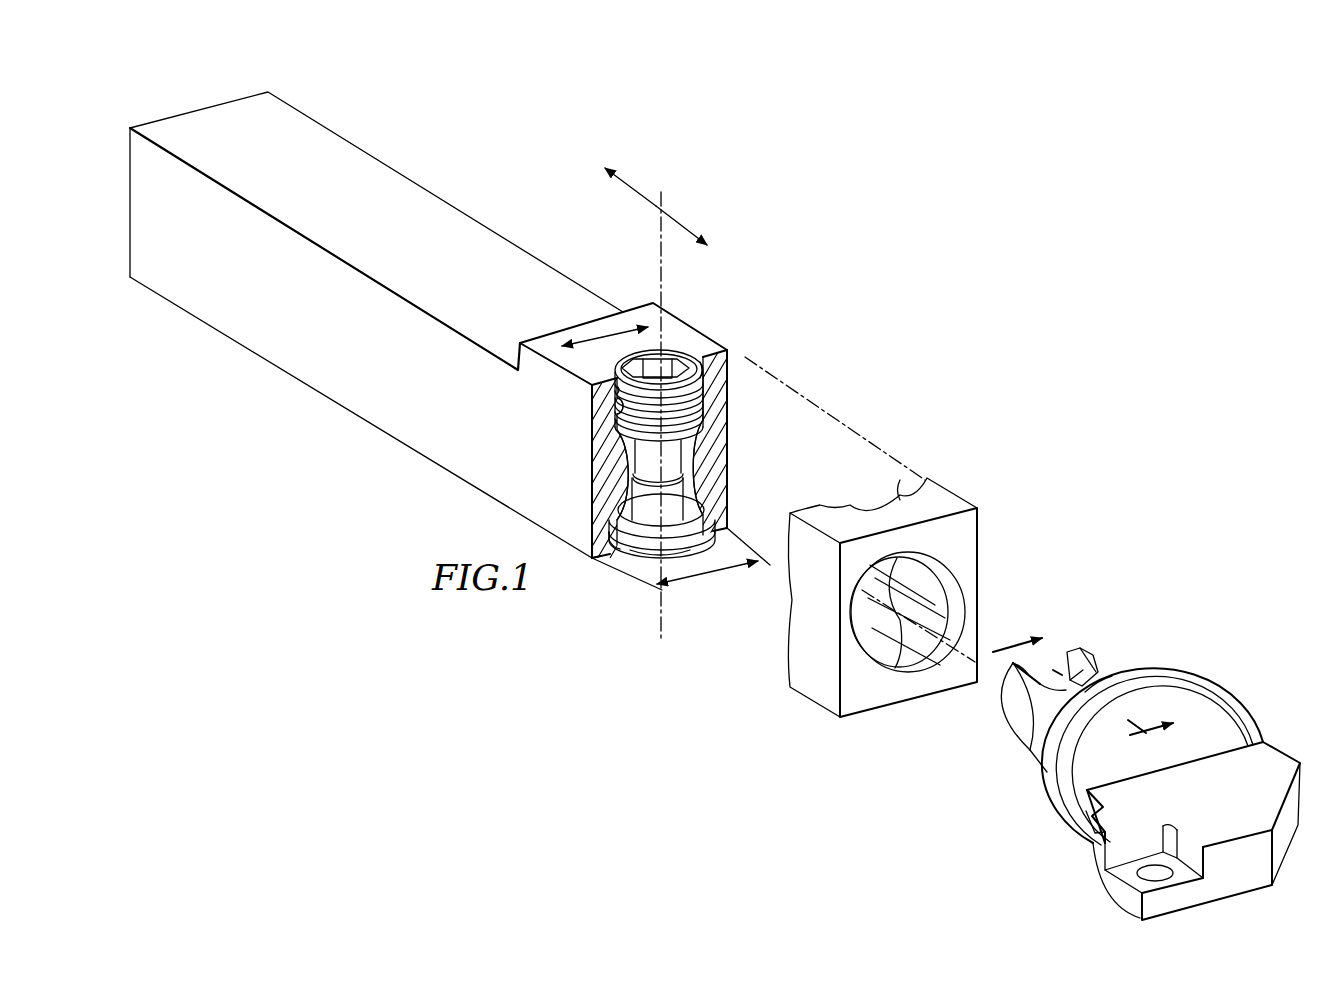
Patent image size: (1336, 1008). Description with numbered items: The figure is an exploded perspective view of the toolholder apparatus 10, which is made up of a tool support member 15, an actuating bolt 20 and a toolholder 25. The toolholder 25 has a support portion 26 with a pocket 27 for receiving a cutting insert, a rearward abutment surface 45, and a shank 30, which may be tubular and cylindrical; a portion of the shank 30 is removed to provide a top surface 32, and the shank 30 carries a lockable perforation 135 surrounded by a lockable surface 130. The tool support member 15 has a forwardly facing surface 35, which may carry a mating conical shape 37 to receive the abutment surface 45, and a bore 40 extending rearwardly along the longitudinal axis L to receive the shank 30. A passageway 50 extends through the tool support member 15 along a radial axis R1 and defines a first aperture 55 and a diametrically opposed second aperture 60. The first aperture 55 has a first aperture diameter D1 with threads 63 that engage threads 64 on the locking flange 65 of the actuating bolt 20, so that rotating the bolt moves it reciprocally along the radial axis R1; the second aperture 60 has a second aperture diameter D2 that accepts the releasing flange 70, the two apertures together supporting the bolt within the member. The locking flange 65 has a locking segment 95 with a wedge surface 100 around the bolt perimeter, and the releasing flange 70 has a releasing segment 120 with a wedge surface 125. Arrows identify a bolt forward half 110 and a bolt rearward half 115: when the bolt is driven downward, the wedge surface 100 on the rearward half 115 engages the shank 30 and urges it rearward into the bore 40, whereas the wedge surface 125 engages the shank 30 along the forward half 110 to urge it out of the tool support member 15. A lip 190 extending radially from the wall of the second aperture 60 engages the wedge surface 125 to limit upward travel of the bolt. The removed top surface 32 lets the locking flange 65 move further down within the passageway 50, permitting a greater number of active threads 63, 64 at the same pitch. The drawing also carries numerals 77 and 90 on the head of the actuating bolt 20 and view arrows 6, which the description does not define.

The apparatus 10 is at (521, 161).
The tool support member 15 is at (415, 430).
The passageway 50 is at (598, 333).
The first aperture 55 is at (670, 352).
The hex socket 77 is at (692, 346).
The screw head rim 90 is at (703, 356).
The locking segment 95 is at (706, 410).
The wedge surface 100 is at (708, 432).
The locking flange 65 is at (620, 394).
The threads 63 is at (622, 414).
The threads 64 is at (620, 434).
The actuating bolt 20 is at (640, 455).
The lip 190 is at (630, 510).
The releasing segment 120 is at (700, 538).
The wedge surface 125 is at (640, 550).
The releasing flange 70 is at (590, 556).
The second aperture 60 is at (611, 552).
The bolt forward half 110 is at (680, 230).
The bolt rearward half 115 is at (632, 186).
The first aperture diameter D1 is at (606, 332).
The second aperture diameter D2 is at (718, 574).
The radial axis R1 is at (662, 272).
The forwardly facing surface 35 is at (970, 545).
The mating conical shape 37 is at (940, 560).
The bore 40 is at (935, 600).
The longitudinal axis L is at (990, 660).
The shank 30 is at (1015, 735).
The top surface 32 is at (1003, 688).
The lockable perforation 135 is at (1080, 655).
The lockable surface 130 is at (1105, 667).
The rearward abutment surface 45 is at (1175, 658).
The section line 6 is at (1121, 674).
The support portion 26 is at (1272, 760).
The toolholder 25 is at (1095, 855).
The pocket 27 is at (1120, 895).